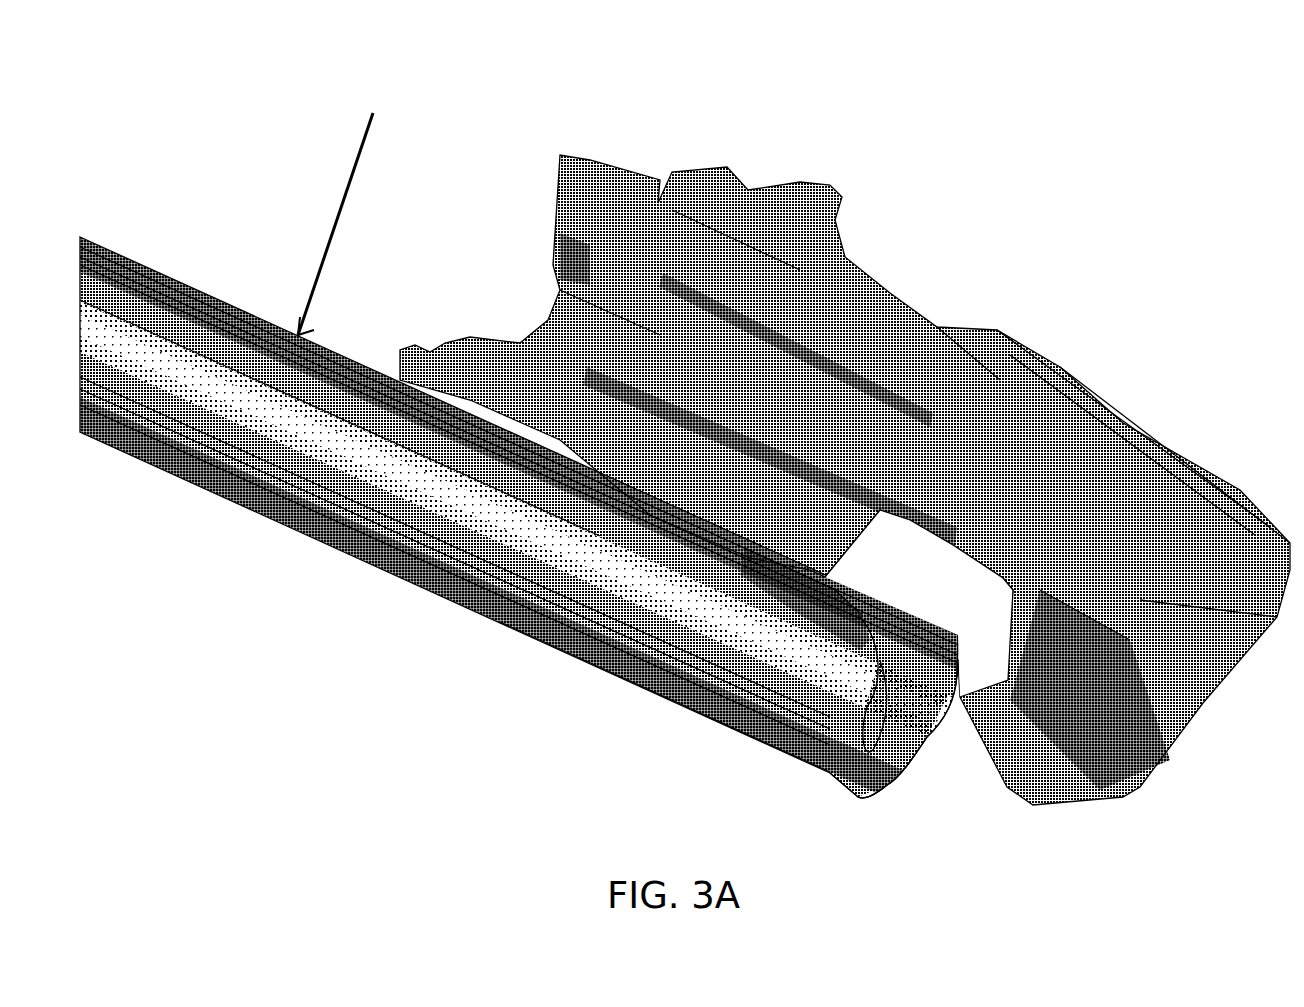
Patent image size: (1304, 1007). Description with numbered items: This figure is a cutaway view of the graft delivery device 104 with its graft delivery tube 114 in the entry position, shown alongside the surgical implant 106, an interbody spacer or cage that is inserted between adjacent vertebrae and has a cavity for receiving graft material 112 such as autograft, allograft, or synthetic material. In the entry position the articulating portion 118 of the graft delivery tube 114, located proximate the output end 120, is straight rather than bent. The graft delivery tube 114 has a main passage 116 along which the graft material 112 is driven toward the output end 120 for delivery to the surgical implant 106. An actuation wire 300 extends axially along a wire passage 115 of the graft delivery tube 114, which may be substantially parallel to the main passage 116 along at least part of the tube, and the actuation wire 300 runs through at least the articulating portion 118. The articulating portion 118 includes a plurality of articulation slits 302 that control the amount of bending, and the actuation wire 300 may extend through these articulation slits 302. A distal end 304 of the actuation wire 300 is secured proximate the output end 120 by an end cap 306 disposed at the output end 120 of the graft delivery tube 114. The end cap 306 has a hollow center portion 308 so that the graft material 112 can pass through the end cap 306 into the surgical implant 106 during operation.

The graft delivery device 104 is at (675, 476).
The surgical implant 106 is at (955, 283).
The graft material 112 is at (557, 570).
The graft delivery tube 114 is at (372, 565).
The wire passage 115 is at (345, 211).
The main passage 116 is at (330, 465).
The articulating portion 118 is at (657, 780).
The output end 120 is at (868, 742).
The actuation wire 300 is at (532, 563).
The articulation slits 302 is at (800, 590).
The distal end 304 is at (942, 648).
The end cap 306 is at (903, 715).
The hollow center portion 308 is at (880, 775).